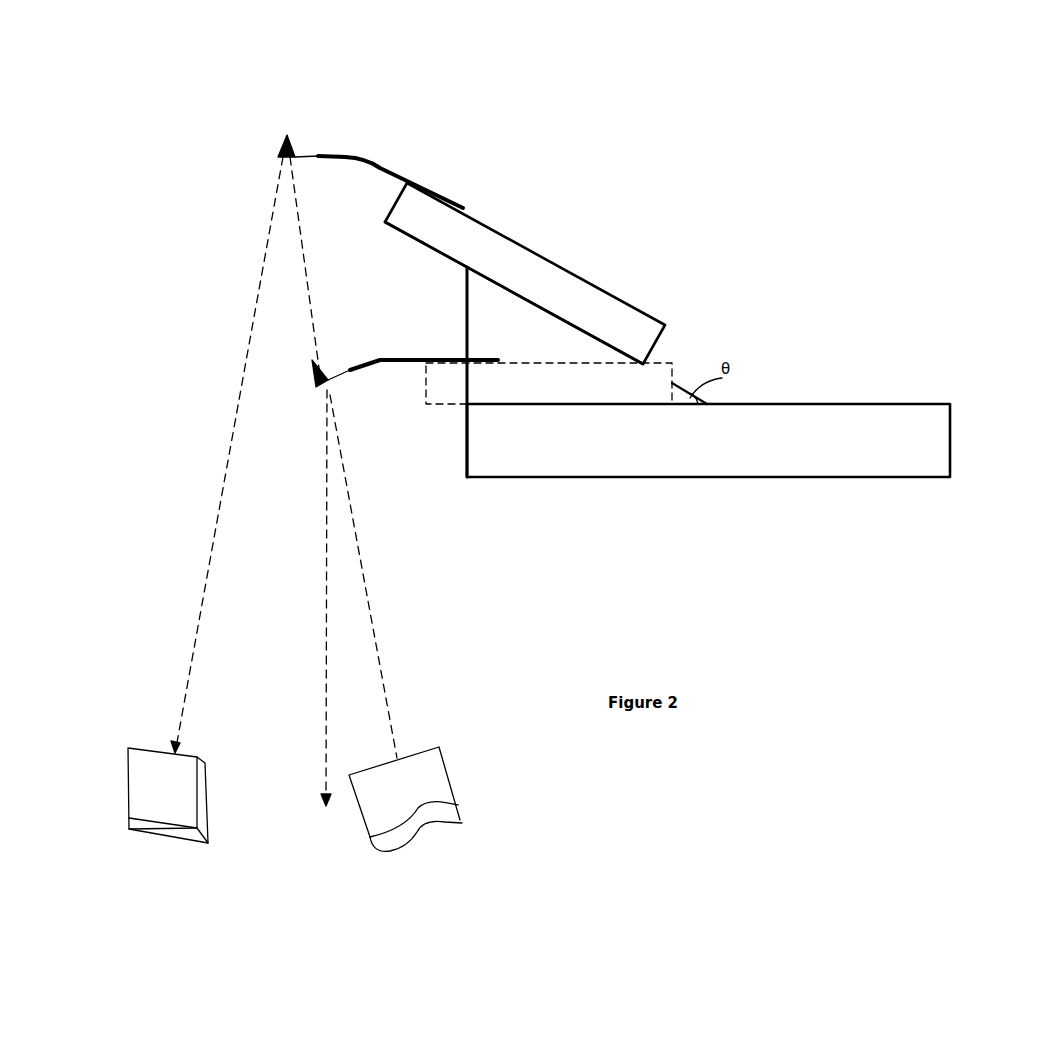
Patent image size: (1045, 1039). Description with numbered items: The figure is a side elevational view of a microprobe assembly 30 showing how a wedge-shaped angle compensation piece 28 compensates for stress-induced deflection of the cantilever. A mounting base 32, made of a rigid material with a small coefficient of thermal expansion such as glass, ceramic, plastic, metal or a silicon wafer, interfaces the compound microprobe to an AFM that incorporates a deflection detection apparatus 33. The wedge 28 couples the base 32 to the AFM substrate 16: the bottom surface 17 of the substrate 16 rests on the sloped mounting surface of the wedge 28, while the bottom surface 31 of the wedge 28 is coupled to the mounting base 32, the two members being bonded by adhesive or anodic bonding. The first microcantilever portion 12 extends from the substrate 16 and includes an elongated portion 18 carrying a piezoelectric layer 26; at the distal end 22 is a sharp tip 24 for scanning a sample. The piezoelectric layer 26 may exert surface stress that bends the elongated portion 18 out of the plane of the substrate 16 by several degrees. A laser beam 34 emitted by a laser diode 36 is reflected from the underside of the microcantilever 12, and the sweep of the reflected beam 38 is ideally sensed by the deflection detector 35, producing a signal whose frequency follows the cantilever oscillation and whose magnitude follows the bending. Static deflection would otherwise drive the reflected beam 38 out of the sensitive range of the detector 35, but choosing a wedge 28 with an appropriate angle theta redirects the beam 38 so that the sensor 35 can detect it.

The first microcantilever portion 12 is at (370, 211).
The AFM substrate 16 is at (493, 223).
The bottom surface of substrate 17 is at (540, 313).
The elongated portion 18 is at (345, 159).
The distal end 22 is at (306, 158).
The sharp tip 24 is at (283, 146).
The piezoelectric layer 26 is at (384, 166).
The angle compensation piece 28 is at (450, 297).
The microprobe assembly 30 is at (818, 179).
The bottom surface of wedge 31 is at (630, 406).
The mounting base 32 is at (826, 403).
The deflection detection apparatus 33 is at (293, 858).
The laser beam 34 is at (367, 605).
The deflection detector 35 is at (128, 762).
The laser diode 36 is at (450, 772).
The reflected beam 38 is at (218, 520).